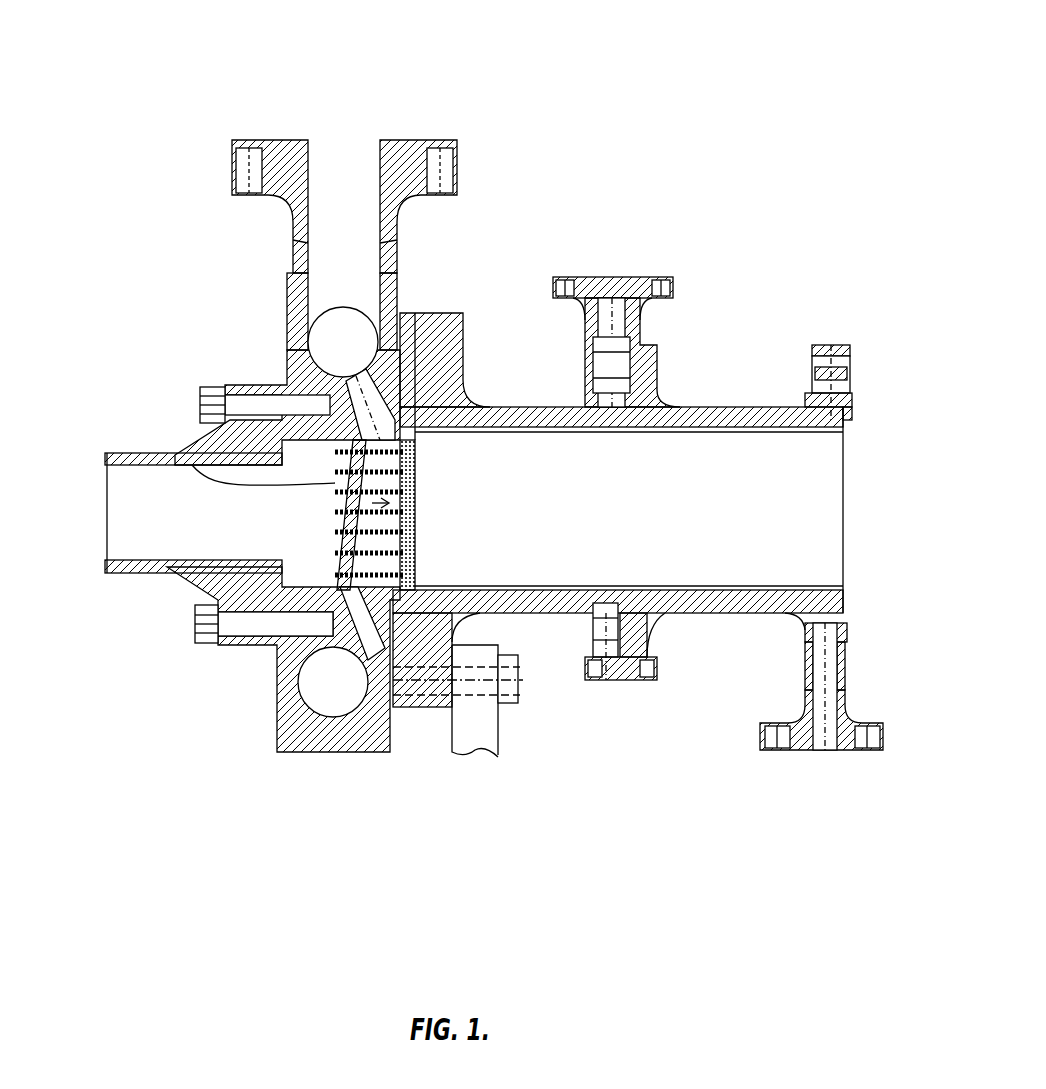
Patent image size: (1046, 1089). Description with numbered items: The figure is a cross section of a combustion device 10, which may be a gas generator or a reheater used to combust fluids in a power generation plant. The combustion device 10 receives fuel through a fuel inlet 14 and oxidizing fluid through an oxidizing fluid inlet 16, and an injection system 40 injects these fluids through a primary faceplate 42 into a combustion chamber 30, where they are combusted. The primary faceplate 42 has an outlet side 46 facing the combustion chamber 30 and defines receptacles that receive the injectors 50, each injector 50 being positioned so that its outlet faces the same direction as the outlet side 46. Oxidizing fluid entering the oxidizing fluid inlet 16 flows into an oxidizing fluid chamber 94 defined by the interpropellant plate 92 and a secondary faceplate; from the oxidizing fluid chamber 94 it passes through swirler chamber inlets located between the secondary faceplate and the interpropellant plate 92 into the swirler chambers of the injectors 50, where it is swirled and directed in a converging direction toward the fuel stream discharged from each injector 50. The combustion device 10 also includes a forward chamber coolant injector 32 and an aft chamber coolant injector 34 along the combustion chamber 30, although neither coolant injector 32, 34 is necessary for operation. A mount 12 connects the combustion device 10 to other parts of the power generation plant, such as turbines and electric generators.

The combustion device 10 is at (180, 95).
The mount 12 is at (495, 753).
The fuel inlet 14 is at (148, 513).
The oxidizing fluid inlet 16 is at (345, 190).
The combustion chamber 30 is at (662, 488).
The forward chamber coolant injector 32 is at (600, 404).
The aft chamber coolant injector 34 is at (810, 622).
The injection system 40 is at (445, 485).
The primary faceplate 42 is at (415, 518).
The outlet side 46 is at (415, 543).
The injector 50 is at (340, 541).
The interpropellant plate 92 is at (188, 458).
The oxidizing fluid chamber 94 is at (335, 513).